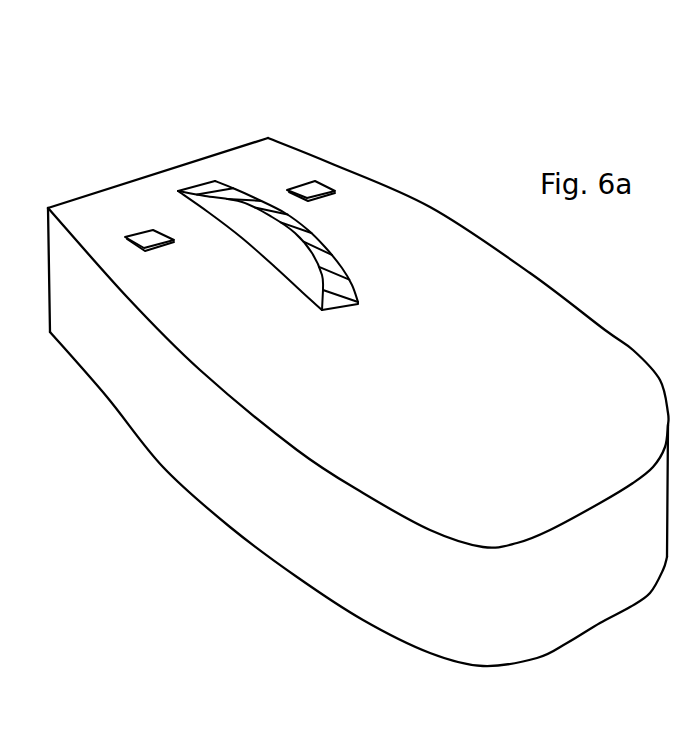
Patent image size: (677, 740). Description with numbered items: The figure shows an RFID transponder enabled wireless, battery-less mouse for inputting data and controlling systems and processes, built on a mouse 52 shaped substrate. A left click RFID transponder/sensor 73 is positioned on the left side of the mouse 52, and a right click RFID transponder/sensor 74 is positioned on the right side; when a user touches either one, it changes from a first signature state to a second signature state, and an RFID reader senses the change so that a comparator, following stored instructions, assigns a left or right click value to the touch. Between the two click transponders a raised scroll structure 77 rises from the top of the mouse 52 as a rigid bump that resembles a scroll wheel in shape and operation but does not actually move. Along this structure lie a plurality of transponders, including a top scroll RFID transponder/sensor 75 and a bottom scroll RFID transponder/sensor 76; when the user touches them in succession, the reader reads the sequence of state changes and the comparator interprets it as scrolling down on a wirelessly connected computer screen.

The mouse 52 is at (595, 423).
The left click RFID transponder/sensor 73 is at (143, 233).
The right click RFID transponder/sensor 74 is at (305, 188).
The top scroll RFID transponder/sensor 75 is at (240, 195).
The bottom scroll RFID transponder/sensor 76 is at (337, 275).
The raised scroll structure 77 is at (275, 244).